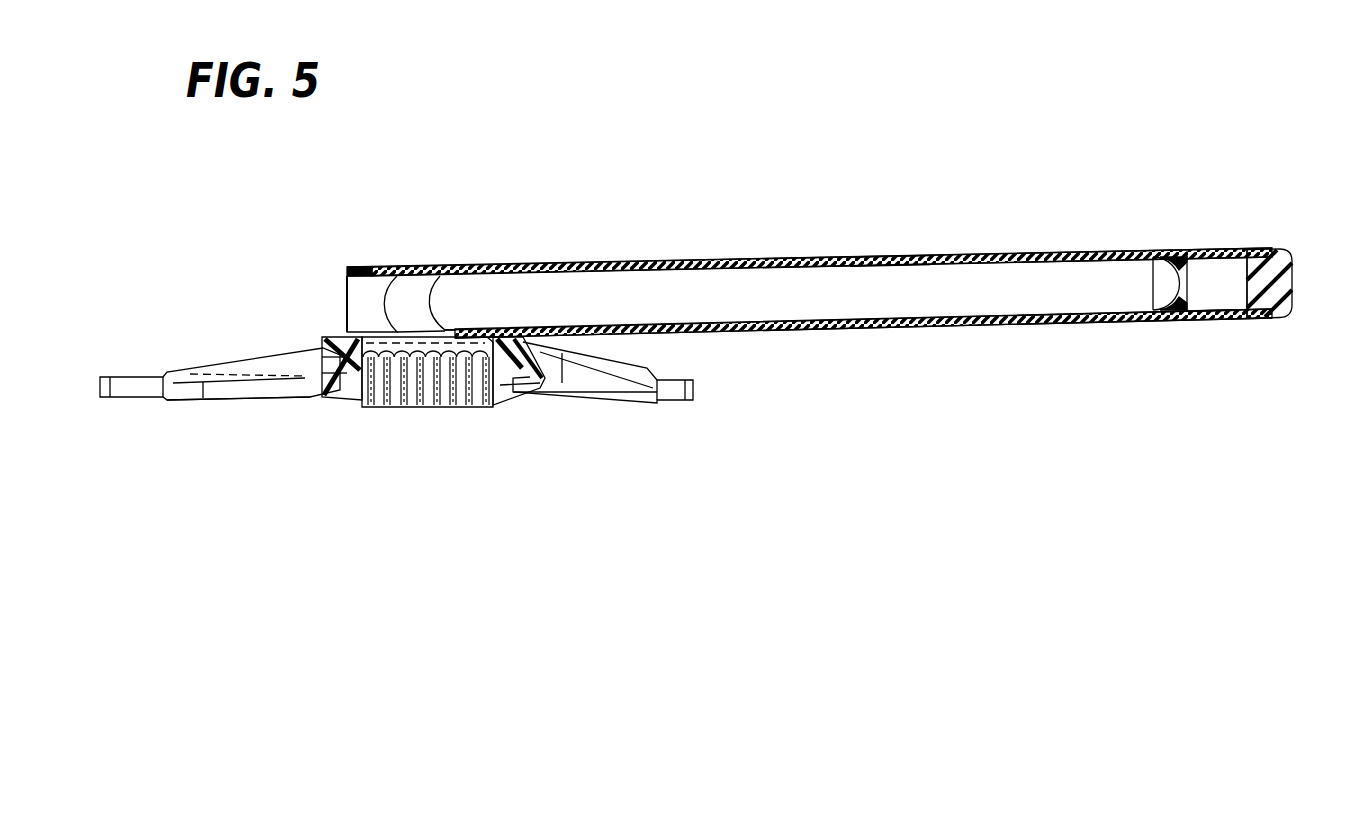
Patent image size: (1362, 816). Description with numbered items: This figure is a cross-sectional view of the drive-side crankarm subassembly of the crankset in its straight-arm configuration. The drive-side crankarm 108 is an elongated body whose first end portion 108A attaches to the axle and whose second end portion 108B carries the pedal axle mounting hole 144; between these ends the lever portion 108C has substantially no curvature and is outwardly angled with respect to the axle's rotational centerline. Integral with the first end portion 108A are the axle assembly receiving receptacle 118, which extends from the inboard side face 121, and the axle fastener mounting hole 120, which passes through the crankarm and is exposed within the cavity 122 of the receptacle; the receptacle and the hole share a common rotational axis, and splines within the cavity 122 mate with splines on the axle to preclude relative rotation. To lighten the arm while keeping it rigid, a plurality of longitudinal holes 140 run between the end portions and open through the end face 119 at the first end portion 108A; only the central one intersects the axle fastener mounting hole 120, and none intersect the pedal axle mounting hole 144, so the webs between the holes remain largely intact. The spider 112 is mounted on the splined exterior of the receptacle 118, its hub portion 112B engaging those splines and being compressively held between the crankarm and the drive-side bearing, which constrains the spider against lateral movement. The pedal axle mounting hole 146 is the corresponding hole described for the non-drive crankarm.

The drive-side crankarm 108 is at (831, 282).
The first end portion 108A is at (368, 266).
The second end portion 108B is at (1268, 256).
The lever portion 108C is at (888, 258).
The spider 112 is at (698, 386).
The hub portion 112B is at (317, 385).
The axle assembly receiving receptacle 118 is at (502, 395).
The end face 119 is at (348, 295).
The axle fastener mounting hole 120 is at (428, 278).
The inboard side face 121 is at (852, 328).
The cavity 122 is at (413, 410).
The longitudinal holes 140 is at (542, 297).
The pedal axle mounting hole 144 is at (1218, 297).
The pedal axle mounting hole 146 is at (333, 336).